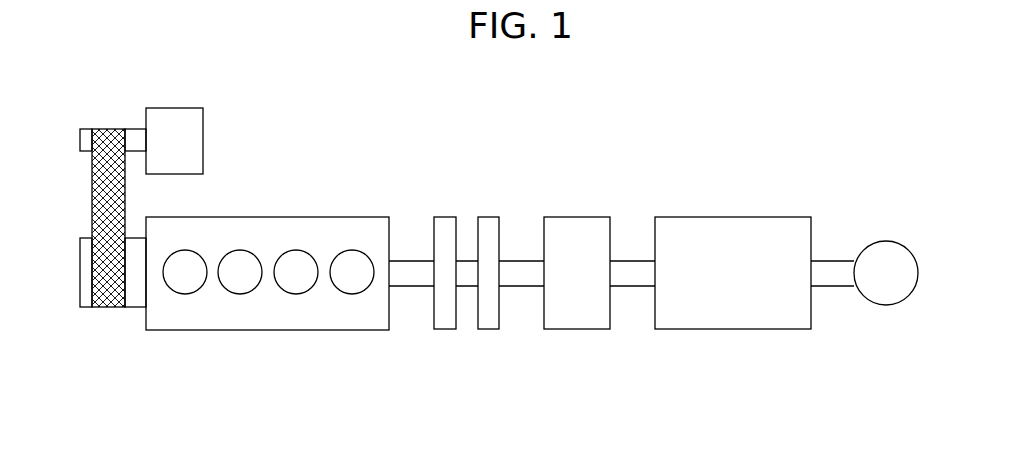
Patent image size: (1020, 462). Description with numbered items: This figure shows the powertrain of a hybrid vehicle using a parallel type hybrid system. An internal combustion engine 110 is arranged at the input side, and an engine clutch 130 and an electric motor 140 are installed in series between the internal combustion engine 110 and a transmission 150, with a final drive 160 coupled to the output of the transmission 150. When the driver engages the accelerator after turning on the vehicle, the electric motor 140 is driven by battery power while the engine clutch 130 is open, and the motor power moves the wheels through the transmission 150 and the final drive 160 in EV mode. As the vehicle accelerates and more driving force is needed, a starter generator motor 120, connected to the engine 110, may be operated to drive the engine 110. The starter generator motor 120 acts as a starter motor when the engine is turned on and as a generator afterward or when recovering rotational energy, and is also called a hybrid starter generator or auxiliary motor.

The internal combustion engine 110 is at (350, 216).
The starter generator motor 120 is at (203, 138).
The engine clutch 130 is at (488, 215).
The electric motor 140 is at (577, 216).
The transmission 150 is at (733, 216).
The final drive 160 is at (886, 240).